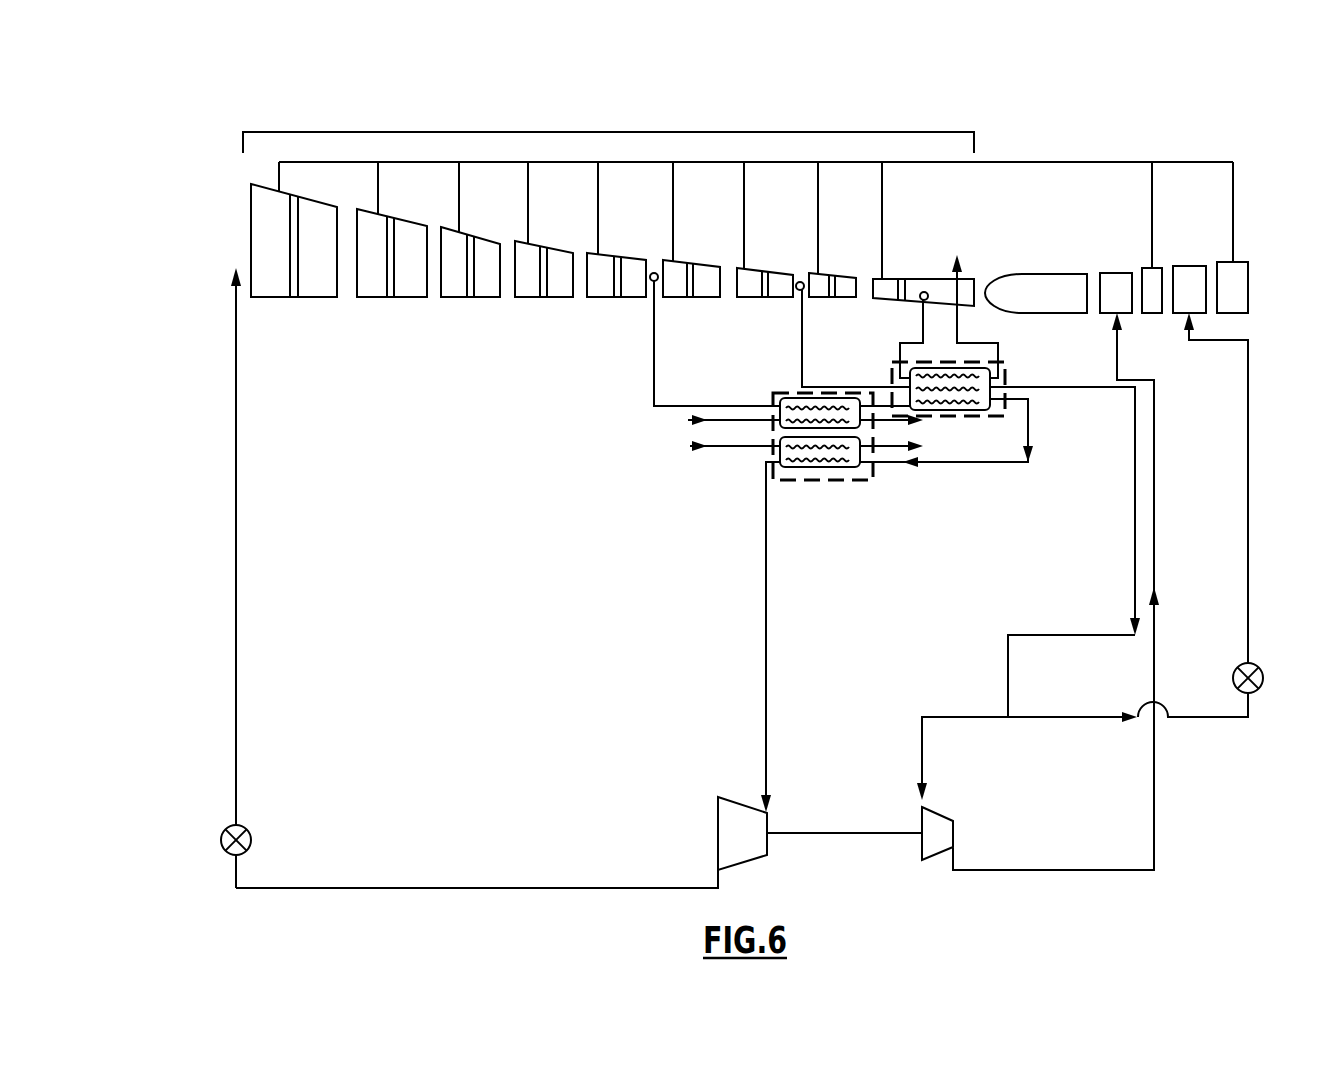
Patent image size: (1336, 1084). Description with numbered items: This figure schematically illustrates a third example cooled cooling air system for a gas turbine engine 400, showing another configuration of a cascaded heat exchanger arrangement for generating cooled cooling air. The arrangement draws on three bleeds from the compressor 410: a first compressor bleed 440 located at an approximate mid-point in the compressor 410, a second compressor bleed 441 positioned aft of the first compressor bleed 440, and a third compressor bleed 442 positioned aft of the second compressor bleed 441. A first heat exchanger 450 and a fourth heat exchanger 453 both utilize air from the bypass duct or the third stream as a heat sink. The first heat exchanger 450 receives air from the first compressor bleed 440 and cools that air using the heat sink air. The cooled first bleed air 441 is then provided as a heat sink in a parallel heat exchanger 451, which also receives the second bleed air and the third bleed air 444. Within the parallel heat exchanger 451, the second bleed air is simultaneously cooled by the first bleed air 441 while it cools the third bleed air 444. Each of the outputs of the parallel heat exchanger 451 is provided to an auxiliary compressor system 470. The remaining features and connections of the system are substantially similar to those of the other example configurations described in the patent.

The gas turbine engine 400 is at (212, 90).
The compressor 410 is at (610, 132).
The first compressor bleed 440 is at (654, 269).
The second compressor bleed 441 is at (801, 278).
The third compressor bleed 442 is at (924, 290).
The third bleed air 444 is at (922, 332).
The first heat exchanger 450 is at (783, 393).
The parallel heat exchanger 451 is at (1005, 374).
The fourth heat exchanger 453 is at (840, 470).
The auxiliary compressor system 470 is at (852, 798).